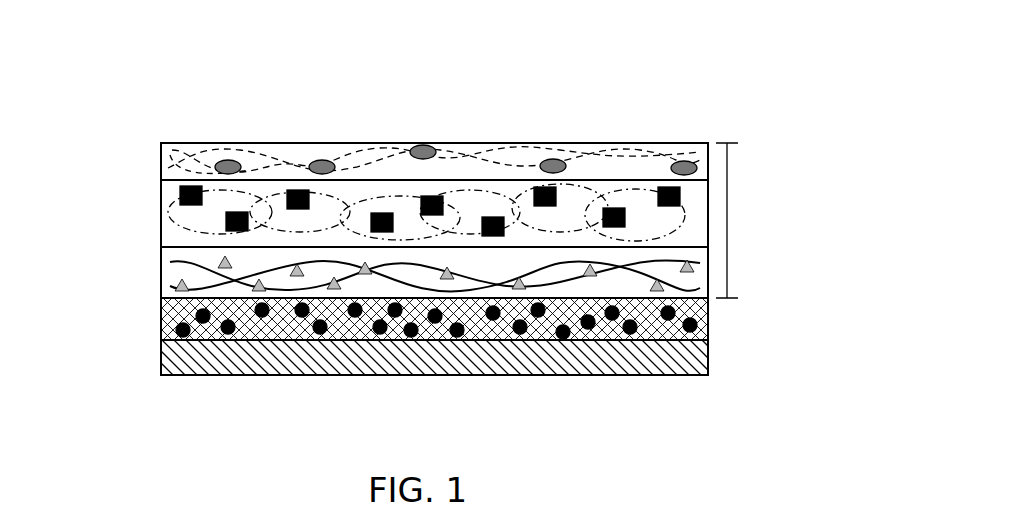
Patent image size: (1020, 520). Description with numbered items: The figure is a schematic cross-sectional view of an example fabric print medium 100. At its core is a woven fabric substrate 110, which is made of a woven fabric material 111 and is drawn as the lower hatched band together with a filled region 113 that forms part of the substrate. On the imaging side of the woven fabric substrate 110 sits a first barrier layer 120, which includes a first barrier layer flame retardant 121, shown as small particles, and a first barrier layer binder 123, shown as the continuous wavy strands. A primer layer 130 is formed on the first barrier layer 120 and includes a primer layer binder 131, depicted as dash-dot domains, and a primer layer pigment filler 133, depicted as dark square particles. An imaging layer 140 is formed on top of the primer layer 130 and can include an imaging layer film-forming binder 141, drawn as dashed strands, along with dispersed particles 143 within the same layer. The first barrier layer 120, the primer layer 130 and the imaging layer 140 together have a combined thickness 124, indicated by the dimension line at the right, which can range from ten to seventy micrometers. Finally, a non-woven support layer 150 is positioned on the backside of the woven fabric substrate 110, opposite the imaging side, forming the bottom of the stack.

The fabric print medium 100 is at (170, 36).
The woven fabric substrate 110 is at (439, 336).
The woven fabric material 111 is at (163, 332).
The particle-filled layer 113 is at (700, 320).
The first barrier layer 120 is at (354, 279).
The first barrier layer flame retardant 121 is at (172, 283).
The first barrier layer binder 123 is at (200, 262).
The combined thickness 124 is at (728, 223).
The primer layer 130 is at (363, 189).
The primer layer binder 131 is at (190, 220).
The primer layer pigment filler 133 is at (182, 192).
The imaging layer 140 is at (439, 134).
The imaging layer film-forming binder 141 is at (296, 158).
The elliptical particles 143 is at (428, 148).
The non-woven support layer 150 is at (535, 385).